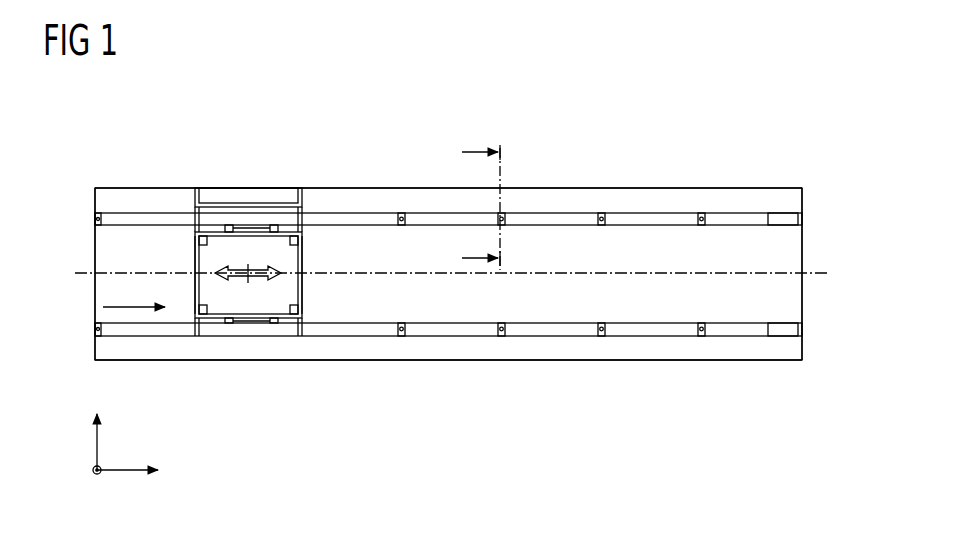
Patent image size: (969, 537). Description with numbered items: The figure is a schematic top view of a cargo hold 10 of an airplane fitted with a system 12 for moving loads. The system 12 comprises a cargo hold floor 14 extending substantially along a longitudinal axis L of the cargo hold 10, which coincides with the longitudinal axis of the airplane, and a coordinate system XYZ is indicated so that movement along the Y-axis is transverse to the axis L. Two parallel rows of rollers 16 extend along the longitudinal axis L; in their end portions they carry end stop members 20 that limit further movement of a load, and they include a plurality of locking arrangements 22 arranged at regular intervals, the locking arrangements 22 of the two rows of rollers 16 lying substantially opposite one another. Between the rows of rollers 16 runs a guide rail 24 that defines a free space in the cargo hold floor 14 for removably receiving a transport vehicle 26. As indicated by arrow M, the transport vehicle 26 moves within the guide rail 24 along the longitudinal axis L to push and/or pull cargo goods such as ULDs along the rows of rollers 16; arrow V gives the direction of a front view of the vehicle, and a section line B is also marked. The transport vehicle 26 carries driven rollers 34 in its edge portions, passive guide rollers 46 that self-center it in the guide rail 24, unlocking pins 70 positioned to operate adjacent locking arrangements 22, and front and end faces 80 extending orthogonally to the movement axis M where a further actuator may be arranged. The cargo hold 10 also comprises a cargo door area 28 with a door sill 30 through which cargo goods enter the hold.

The cargo hold 10 is at (692, 80).
The system for moving loads 12 is at (770, 154).
The cargo hold floor 14 is at (766, 347).
The rows of rollers 16 is at (622, 213).
The end stop members 20 is at (96, 218).
The locking arrangements 22 is at (401, 212).
The guide rail 24 is at (106, 240).
The transport vehicle 26 is at (243, 268).
The cargo door area 28 is at (188, 170).
The door sill 30 is at (267, 203).
The driven rollers 34 is at (200, 236).
The passive guide rollers 46 is at (228, 226).
The unlocking pin 70 is at (255, 228).
The front and end faces 80 is at (190, 233).
The longitudinal axis L is at (812, 271).
The arrow M is at (215, 273).
The arrow V is at (103, 307).
The section line B is at (471, 206).
The coordinate system XYZ is at (115, 455).